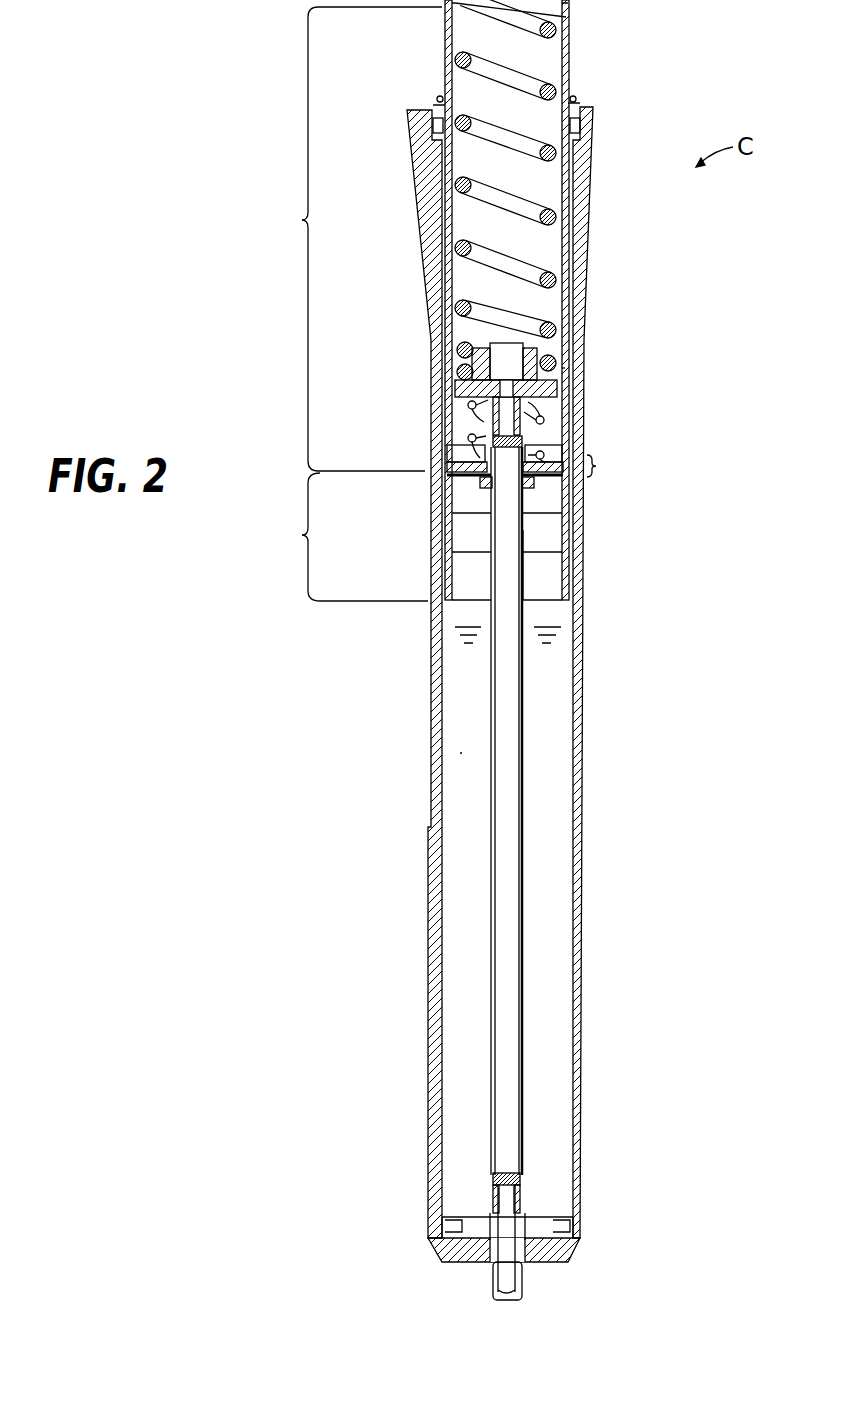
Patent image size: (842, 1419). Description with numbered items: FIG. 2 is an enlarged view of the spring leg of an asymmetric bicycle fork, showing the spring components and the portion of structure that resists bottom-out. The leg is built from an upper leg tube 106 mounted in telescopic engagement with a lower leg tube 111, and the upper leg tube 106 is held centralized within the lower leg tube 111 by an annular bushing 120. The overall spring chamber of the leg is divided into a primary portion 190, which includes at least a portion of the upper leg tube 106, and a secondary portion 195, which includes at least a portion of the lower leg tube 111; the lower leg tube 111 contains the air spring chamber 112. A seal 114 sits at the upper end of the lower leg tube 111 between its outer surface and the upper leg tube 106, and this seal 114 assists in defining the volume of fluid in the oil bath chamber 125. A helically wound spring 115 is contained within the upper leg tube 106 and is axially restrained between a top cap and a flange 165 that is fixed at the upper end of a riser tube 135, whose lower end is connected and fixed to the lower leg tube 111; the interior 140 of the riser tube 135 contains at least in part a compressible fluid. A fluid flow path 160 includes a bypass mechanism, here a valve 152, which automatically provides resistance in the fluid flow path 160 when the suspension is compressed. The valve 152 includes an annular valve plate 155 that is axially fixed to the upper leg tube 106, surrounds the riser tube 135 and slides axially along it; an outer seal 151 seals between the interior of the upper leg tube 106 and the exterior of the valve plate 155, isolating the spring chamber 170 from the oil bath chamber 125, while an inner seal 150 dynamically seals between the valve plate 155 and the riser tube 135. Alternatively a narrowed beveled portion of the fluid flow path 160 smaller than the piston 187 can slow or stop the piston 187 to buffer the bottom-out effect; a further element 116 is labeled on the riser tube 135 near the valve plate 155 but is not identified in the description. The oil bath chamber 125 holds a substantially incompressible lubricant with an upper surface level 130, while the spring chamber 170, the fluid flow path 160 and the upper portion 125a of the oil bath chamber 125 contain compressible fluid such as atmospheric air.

The upper leg tube 106 is at (575, 365).
The lower leg tube 111 is at (418, 205).
The air spring chamber 112 is at (547, 820).
The seal 114 is at (585, 108).
The helically wound spring 115 is at (535, 72).
The rod collar 116 is at (540, 436).
The annular bushing 120 is at (431, 527).
The oil bath chamber 125 is at (462, 753).
The upper portion of oil bath chamber 125a is at (550, 533).
The upper surface level 130 is at (460, 625).
The riser tube 135 is at (524, 738).
The interior of riser tube 140 is at (510, 668).
The inner seal 150 is at (540, 497).
The outer seal 151 is at (448, 466).
The valve 152 is at (542, 461).
The valve plate 155 is at (466, 440).
The fluid flow path 160 is at (502, 348).
The flange 165 is at (556, 391).
The spring chamber 170 is at (567, 20).
The piston 187 is at (490, 388).
The primary portion 190 is at (351, 239).
The secondary portion 195 is at (344, 537).